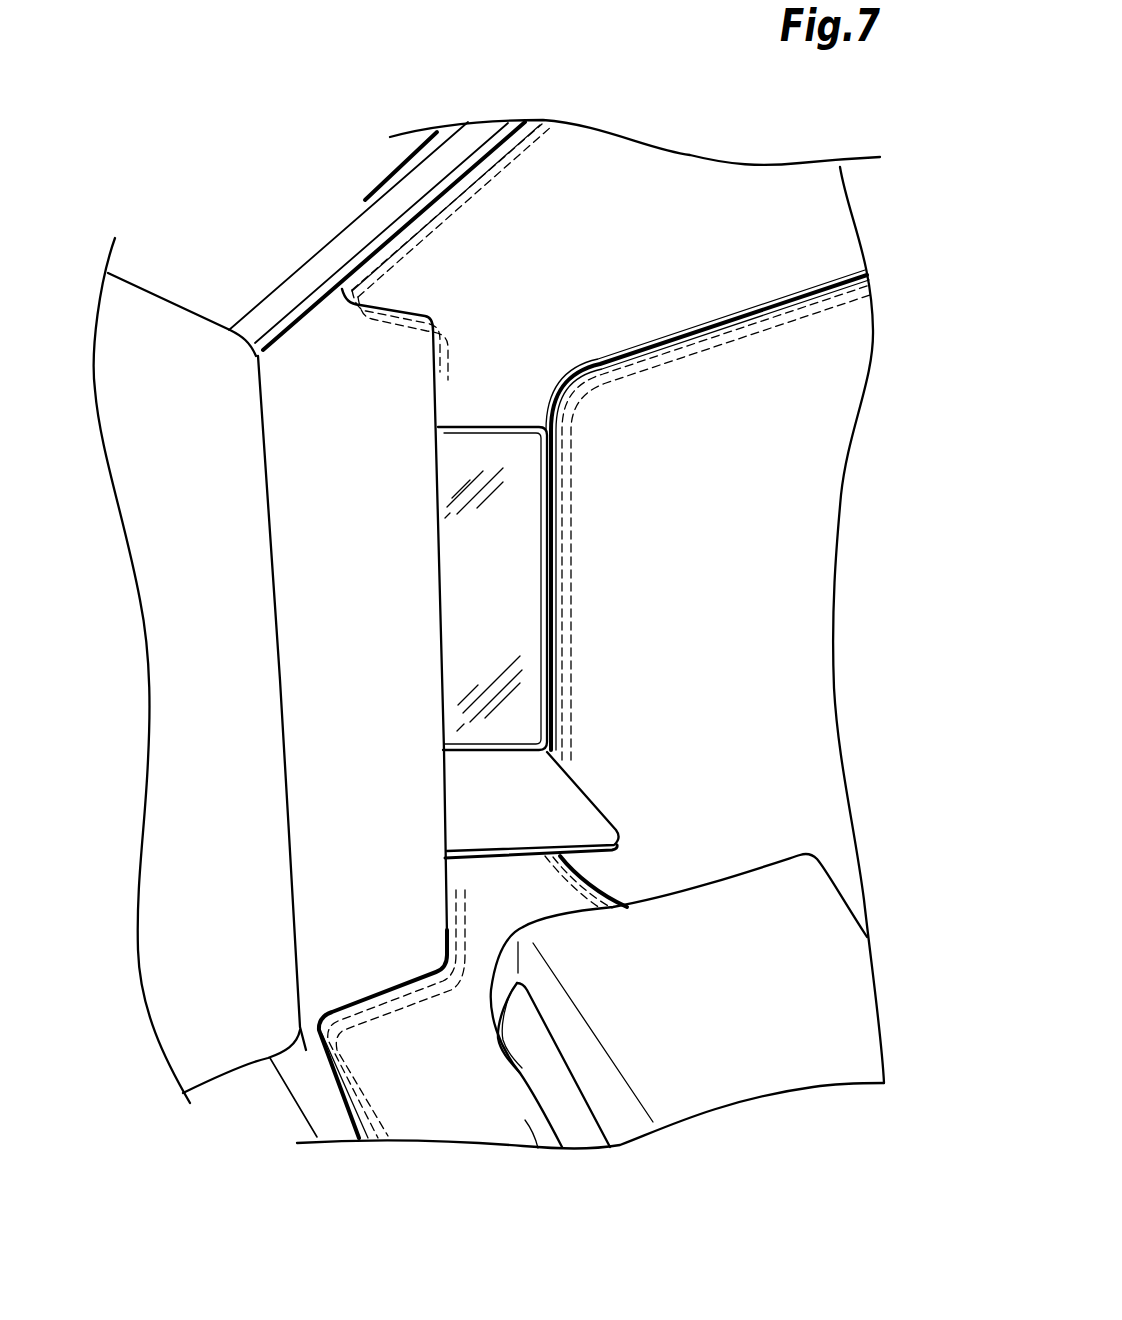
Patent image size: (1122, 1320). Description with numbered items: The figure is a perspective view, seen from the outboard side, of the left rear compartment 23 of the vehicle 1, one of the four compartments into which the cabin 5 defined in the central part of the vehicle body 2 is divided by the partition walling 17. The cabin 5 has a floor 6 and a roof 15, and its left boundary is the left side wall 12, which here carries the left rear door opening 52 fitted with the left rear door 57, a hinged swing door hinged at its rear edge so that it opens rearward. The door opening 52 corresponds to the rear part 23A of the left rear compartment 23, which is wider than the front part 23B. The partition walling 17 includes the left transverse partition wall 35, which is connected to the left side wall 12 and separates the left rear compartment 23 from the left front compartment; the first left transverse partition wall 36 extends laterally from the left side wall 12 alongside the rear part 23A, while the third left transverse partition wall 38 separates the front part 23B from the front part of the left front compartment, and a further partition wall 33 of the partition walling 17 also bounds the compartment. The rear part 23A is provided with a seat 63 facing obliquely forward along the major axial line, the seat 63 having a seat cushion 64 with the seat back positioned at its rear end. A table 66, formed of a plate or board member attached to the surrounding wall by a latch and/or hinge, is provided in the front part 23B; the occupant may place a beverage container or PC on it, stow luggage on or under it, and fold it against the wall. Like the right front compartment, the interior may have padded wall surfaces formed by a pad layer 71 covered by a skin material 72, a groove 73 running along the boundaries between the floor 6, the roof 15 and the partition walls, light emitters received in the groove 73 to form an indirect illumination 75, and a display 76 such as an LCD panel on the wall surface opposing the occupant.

The vehicle body side structure 1 is at (470, 93).
The vehicle body 2 is at (265, 313).
The cabin 5 is at (700, 210).
The floor 6 is at (403, 1107).
The left side wall 12 is at (322, 260).
The roof 15 is at (763, 200).
The partition walling 17 is at (320, 530).
The left rear compartment 23 is at (470, 1104).
The rear part of the left rear compartment 23A is at (525, 1125).
The front part of the left rear compartment 23B is at (487, 878).
The quarter panel 33 is at (803, 558).
The left transverse partition wall 35 is at (326, 682).
The first left transverse partition wall 36 is at (307, 732).
The third left transverse partition wall 38 is at (470, 424).
The left rear door opening 52 is at (349, 1108).
The left rear door 57 is at (173, 975).
The seat 63 is at (817, 847).
The seat cushion 64 is at (817, 890).
The table 66 is at (568, 803).
The pad layer 71 is at (753, 434).
The skin material 72 is at (811, 493).
The groove 73 is at (397, 235).
The indirect illumination 75 is at (517, 153).
The display 76 is at (510, 582).